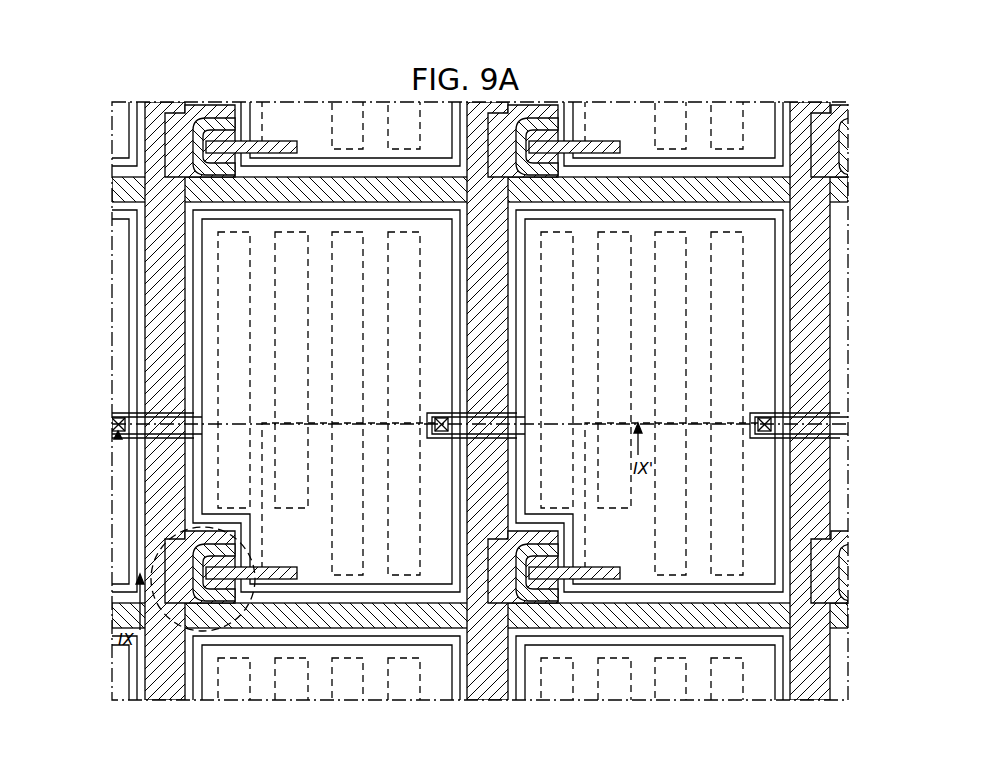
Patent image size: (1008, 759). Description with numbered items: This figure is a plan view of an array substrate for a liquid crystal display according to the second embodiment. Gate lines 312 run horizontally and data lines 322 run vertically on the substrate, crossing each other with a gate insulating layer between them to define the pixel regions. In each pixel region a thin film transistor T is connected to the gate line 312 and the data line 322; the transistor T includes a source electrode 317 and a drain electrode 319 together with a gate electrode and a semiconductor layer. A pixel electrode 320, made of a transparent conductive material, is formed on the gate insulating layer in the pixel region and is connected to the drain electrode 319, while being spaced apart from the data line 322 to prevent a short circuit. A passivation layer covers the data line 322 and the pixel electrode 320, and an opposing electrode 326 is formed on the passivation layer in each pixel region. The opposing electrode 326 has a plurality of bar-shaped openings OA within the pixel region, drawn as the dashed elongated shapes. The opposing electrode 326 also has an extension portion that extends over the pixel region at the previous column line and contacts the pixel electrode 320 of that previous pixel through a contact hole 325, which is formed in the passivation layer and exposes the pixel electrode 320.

The gate line 312 is at (372, 631).
The source electrode 317 is at (203, 604).
The drain electrode 319 is at (270, 567).
The pixel electrode 320 is at (203, 285).
The data line 322 is at (150, 327).
The contact hole 325 is at (441, 435).
The opposing electrode 326 is at (192, 362).
The bar-shaped openings OA is at (735, 290).
The thin film transistor T is at (143, 555).